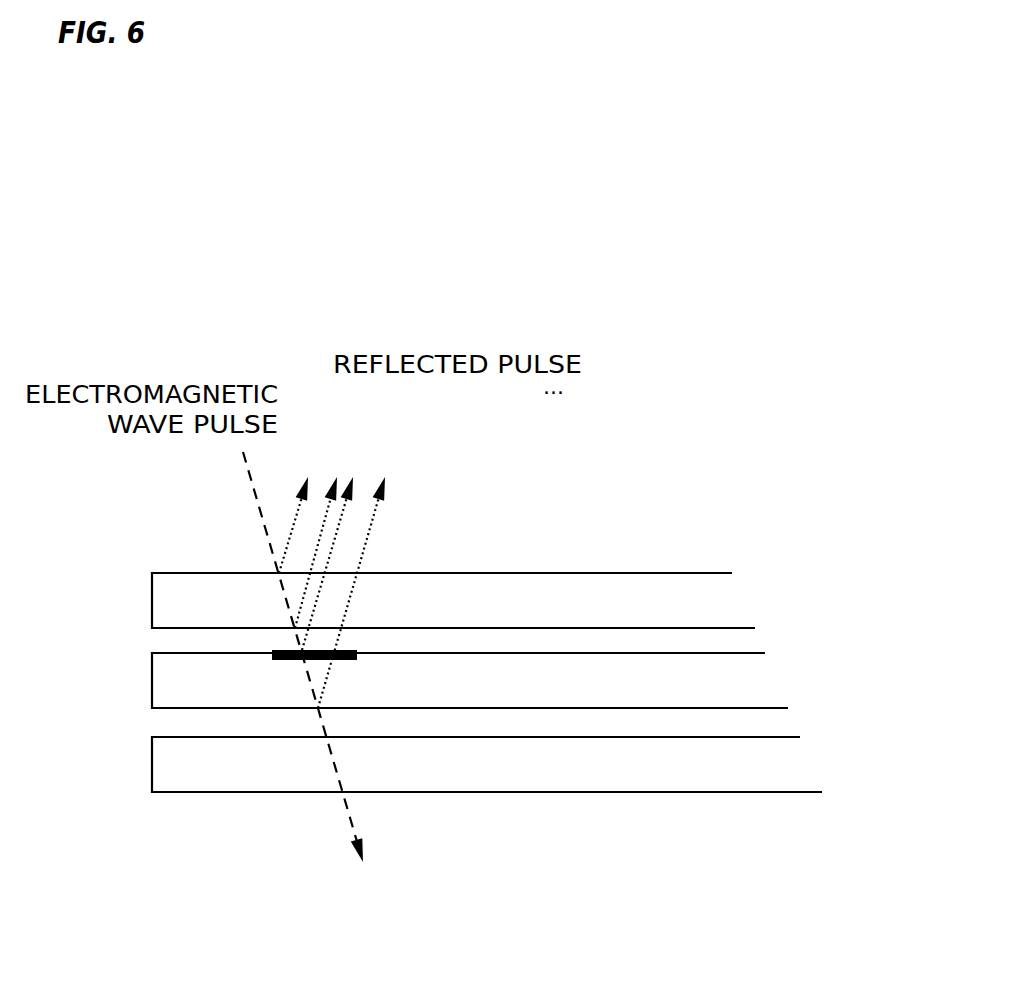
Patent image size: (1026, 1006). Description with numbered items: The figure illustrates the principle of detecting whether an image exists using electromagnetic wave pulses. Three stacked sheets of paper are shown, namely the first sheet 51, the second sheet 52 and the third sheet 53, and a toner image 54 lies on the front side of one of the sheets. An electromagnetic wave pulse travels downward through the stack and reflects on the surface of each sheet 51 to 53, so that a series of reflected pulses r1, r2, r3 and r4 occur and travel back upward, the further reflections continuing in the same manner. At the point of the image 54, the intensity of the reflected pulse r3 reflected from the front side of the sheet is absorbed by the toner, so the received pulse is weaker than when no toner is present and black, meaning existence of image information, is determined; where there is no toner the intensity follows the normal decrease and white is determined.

The first sheet of paper 51 is at (705, 605).
The second sheet of paper 52 is at (745, 687).
The third sheet of paper 53 is at (793, 770).
The image 54 is at (284, 645).
The reflected pulse r1 is at (307, 475).
The reflected pulse r2 is at (337, 475).
The reflected pulse r3 is at (355, 475).
The fourth reflected pulse r4 is at (393, 482).